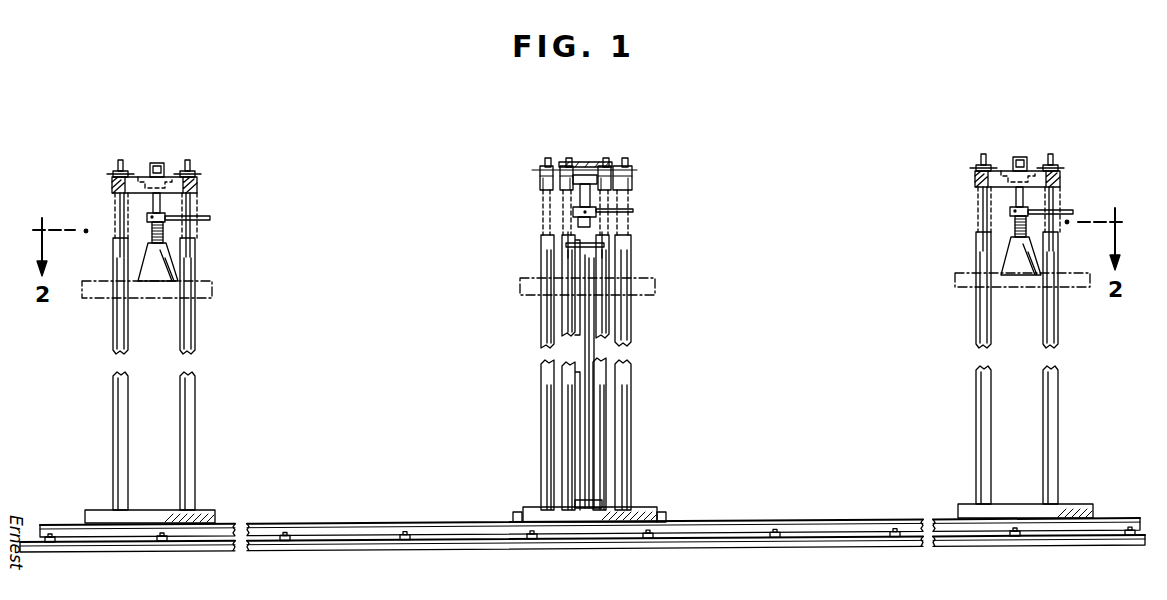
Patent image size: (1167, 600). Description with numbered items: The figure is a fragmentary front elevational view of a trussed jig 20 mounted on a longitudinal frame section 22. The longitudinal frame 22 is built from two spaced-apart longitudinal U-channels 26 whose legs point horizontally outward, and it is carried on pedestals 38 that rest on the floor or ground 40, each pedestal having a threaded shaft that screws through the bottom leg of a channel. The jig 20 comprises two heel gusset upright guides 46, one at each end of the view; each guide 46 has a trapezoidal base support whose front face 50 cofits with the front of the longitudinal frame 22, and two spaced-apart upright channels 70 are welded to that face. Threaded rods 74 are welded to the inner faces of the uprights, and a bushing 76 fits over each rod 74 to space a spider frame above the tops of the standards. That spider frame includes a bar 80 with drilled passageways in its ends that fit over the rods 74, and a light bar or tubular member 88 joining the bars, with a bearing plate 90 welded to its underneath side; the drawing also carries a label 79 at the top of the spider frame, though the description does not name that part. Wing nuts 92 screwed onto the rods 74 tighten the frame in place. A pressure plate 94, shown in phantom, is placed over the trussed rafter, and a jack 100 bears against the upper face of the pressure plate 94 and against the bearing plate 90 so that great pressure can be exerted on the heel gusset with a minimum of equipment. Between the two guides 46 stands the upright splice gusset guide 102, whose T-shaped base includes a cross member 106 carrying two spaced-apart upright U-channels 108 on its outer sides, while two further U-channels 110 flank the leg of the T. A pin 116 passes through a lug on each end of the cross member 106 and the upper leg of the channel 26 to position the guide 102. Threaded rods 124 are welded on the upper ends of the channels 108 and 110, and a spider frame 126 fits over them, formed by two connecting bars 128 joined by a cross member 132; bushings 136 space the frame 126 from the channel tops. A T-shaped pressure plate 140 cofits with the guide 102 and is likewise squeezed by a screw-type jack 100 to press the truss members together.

The trussed jig 20 is at (1141, 517).
The longitudinal frame section 22 is at (585, 534).
The longitudinal U-channel 26 is at (291, 524).
The pedestal 38 is at (390, 542).
The floor or ground 40 is at (325, 549).
The heel gusset upright guide 46 is at (85, 510).
The face 50 is at (168, 512).
The channel 70 is at (124, 488).
The threaded rod 74 is at (120, 160).
The bushing 76 is at (113, 210).
The cap 79 is at (167, 163).
The bar 80 is at (138, 194).
The tubular member 88 is at (158, 163).
The bearing plate 90 is at (142, 176).
The wing nut 92 is at (113, 173).
The pressure plate 94 is at (214, 291).
The jack 100 is at (157, 270).
The upright splice gusset guide 102 is at (659, 507).
The cross member 106 is at (640, 506).
The U-channel 108 is at (548, 424).
The U-channel 110 is at (607, 341).
The pin 116 is at (514, 512).
The threaded rod 124 is at (548, 158).
The spider frame 126 is at (600, 160).
The connecting bar 128 is at (633, 181).
The cross member 132 is at (590, 162).
The bushing 136 is at (543, 201).
The pressure plate 140 is at (656, 287).